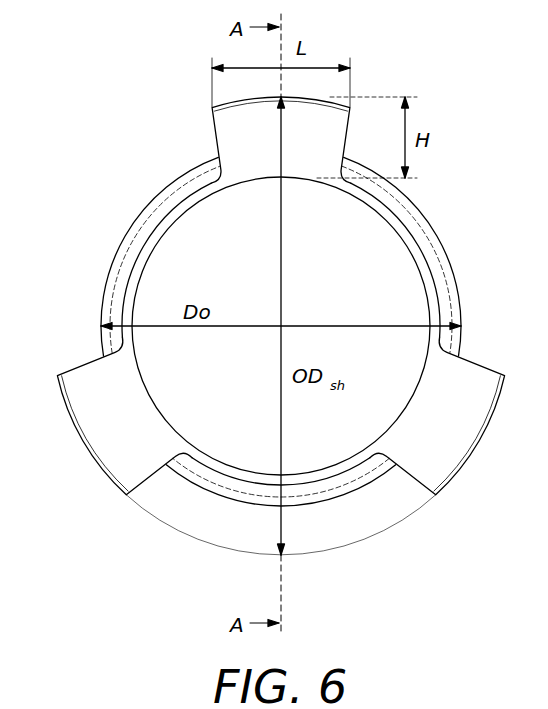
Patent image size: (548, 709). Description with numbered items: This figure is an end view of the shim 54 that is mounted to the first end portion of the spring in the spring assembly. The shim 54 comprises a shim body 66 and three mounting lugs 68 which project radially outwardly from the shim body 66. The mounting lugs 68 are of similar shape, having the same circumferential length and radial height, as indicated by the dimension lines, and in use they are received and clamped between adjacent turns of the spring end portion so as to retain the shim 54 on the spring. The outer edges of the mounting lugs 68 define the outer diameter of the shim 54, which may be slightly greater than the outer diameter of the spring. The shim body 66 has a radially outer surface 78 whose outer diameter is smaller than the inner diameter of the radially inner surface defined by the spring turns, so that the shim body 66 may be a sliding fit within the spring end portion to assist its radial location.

The shim 54 is at (278, 326).
The shim body 66 is at (425, 252).
The mounting lugs 68 is at (237, 126).
The radially outer surface 78 is at (460, 293).